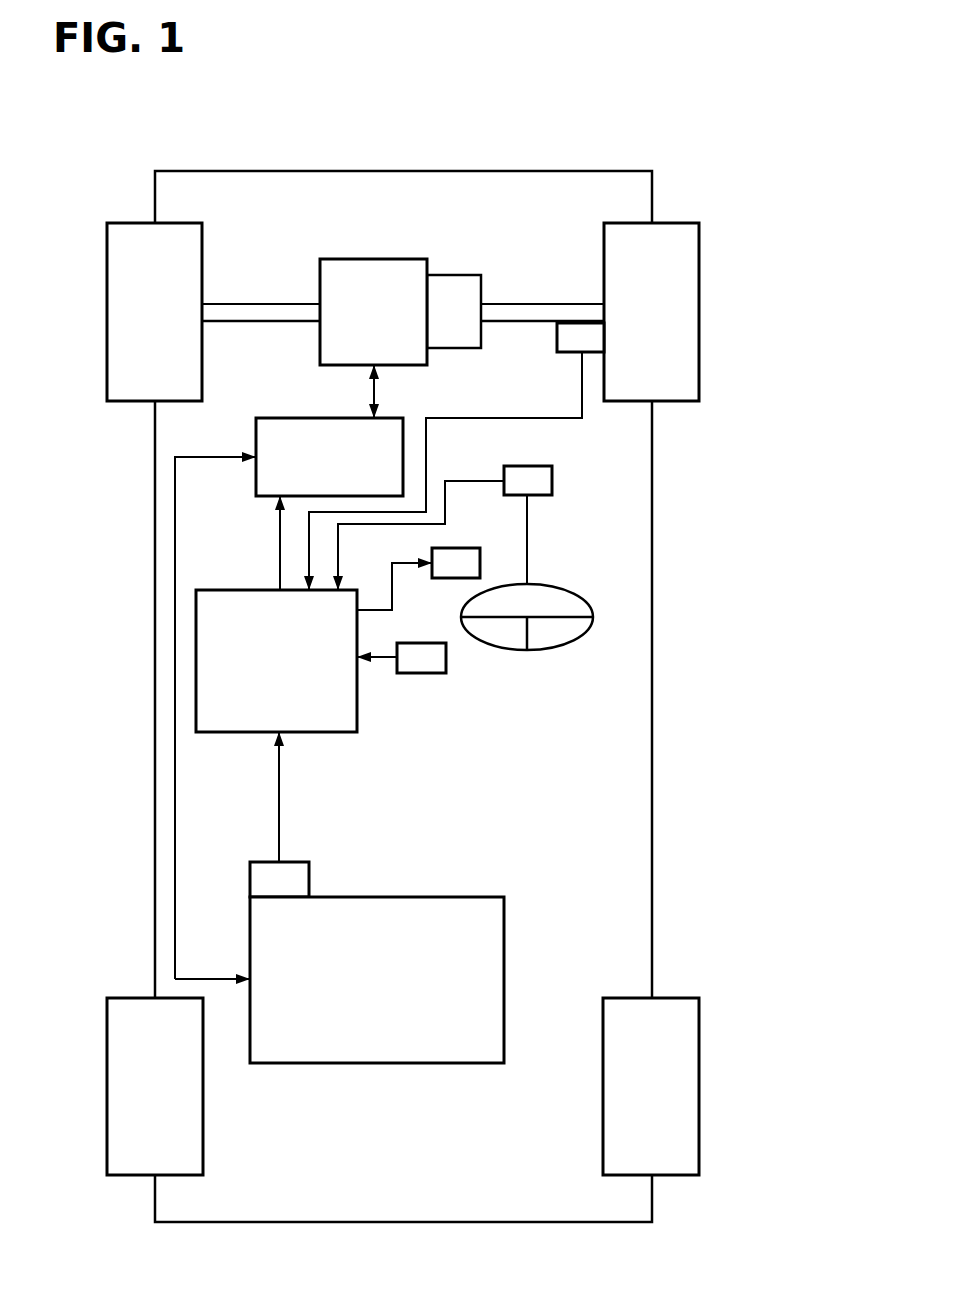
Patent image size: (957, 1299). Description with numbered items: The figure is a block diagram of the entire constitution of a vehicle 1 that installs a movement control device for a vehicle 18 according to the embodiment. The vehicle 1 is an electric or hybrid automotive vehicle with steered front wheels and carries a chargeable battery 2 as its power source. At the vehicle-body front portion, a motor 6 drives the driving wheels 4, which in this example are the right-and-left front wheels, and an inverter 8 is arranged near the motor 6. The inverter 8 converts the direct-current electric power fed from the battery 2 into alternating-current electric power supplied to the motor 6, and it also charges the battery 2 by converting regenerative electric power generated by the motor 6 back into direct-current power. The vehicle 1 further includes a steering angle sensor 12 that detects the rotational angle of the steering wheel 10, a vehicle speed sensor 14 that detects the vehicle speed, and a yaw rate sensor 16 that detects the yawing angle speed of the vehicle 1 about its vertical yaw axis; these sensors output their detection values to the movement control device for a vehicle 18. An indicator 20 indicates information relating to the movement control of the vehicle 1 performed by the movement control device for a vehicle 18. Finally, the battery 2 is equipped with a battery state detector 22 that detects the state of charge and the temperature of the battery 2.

The vehicle 1 is at (544, 95).
The battery 2 is at (376, 896).
The driving wheels 4 is at (106, 311).
The motor 6 is at (372, 258).
The inverter 8 is at (277, 417).
The steering wheel 10 is at (564, 584).
The steering angle sensor 12 is at (552, 481).
The vehicle speed sensor 14 is at (565, 353).
The yaw rate sensor 16 is at (418, 675).
The movement control device for a vehicle 18 is at (223, 589).
The indicator 20 is at (456, 547).
The battery state detector 22 is at (293, 861).